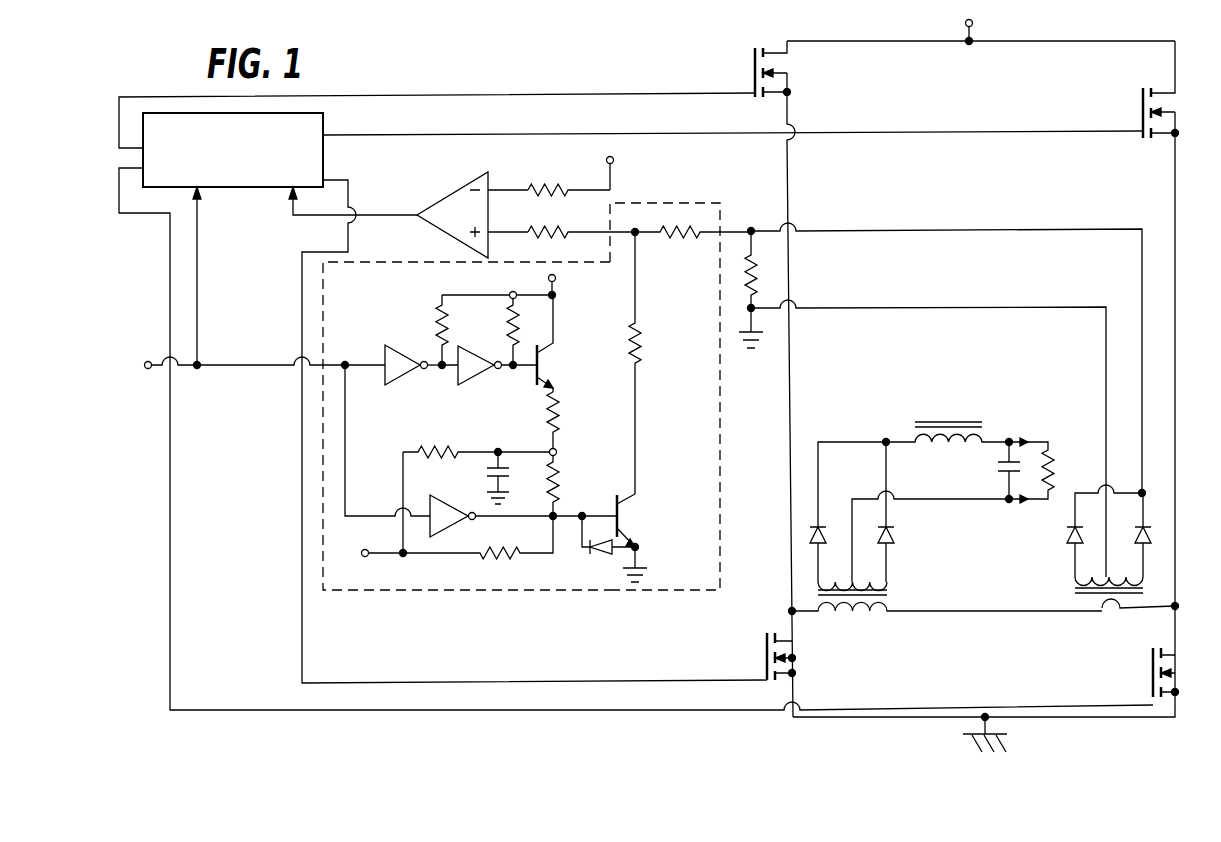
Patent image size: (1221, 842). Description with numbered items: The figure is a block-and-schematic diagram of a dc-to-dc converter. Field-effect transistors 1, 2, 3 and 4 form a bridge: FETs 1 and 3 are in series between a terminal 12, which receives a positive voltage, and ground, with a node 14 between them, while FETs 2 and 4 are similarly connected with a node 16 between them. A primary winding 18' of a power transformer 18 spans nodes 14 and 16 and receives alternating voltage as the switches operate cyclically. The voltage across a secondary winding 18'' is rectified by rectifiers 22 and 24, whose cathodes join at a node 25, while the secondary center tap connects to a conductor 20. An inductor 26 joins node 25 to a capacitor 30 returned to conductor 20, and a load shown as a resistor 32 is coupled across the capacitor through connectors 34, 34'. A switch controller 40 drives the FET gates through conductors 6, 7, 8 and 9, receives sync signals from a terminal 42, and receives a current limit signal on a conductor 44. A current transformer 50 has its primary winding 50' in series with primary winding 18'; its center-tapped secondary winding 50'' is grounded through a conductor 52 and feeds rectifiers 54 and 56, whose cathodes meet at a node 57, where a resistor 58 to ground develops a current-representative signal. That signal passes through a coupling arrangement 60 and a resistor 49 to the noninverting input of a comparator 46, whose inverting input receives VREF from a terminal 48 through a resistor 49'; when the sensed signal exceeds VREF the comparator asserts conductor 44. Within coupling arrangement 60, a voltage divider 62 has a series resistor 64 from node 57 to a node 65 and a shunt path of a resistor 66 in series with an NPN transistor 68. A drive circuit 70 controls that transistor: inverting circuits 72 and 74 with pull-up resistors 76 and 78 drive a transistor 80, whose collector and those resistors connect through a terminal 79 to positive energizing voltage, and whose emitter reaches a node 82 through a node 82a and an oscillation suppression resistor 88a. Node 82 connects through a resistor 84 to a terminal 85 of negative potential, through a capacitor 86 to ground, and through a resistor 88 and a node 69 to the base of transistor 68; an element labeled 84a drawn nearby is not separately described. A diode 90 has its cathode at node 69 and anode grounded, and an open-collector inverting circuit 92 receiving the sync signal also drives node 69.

The field-effect transistor 1 is at (752, 76).
The field-effect transistor 2 is at (1140, 104).
The field-effect transistor 3 is at (766, 666).
The field-effect transistor 4 is at (1150, 674).
The conductor 6 is at (510, 94).
The conductor 7 is at (516, 135).
The conductor 8 is at (366, 683).
The conductor 9 is at (274, 707).
The terminal 12 is at (966, 24).
The node 14 is at (790, 610).
The node 16 is at (1172, 608).
The power transformer 18 is at (874, 590).
The primary winding 18' is at (947, 631).
The secondary winding 18'' is at (884, 572).
The conductor 20 is at (965, 501).
The semiconductor rectifier 22 is at (821, 524).
The rectifier 24 is at (887, 534).
The node 25 is at (886, 440).
The inductor 26 is at (948, 448).
The capacitor 30 is at (1002, 479).
The resistor 32 is at (1054, 470).
The connector 34 is at (1034, 419).
The connector 34' is at (1033, 520).
The switch controller 40 is at (248, 188).
The terminal 42 is at (146, 368).
The conductor 44 is at (385, 213).
The comparator 46 is at (456, 181).
The terminal 48 is at (614, 160).
The resistor 49 is at (581, 216).
The resistor 49' is at (569, 168).
The current transformer 50 is at (1088, 590).
The primary winding 50' is at (1118, 626).
The center-tapped secondary winding 50'' is at (1148, 590).
The conductor 52 is at (1012, 308).
The rectifier 54 is at (1066, 542).
The rectifier 56 is at (1153, 536).
The node 57 is at (751, 228).
The resistor 58 is at (753, 300).
The coupling arrangement 60 is at (470, 587).
The voltage divider 62 is at (690, 392).
The series resistor 64 is at (677, 236).
The node 65 is at (636, 234).
The second resistor 66 is at (638, 345).
The bipolar NPN transistor 68 is at (612, 510).
The node 69 is at (554, 516).
The drive circuit 70 is at (386, 454).
The inverting circuit 72 is at (389, 380).
The inverting circuit 74 is at (478, 377).
The pull-up resistor 76 is at (439, 328).
The pull-up resistor 78 is at (512, 334).
The terminal 79 is at (548, 278).
The bipolar NPN transistor 80 is at (537, 378).
The node 82 is at (558, 452).
The node 82a is at (558, 385).
The resistor 84 is at (432, 452).
The resistor 84a is at (525, 550).
The terminal 85 is at (367, 553).
The capacitor 86 is at (486, 470).
The resistor 88 is at (562, 490).
The oscillation suppression resistor 88a is at (561, 414).
The diode 90 is at (599, 555).
The inverting circuit 92 is at (456, 524).